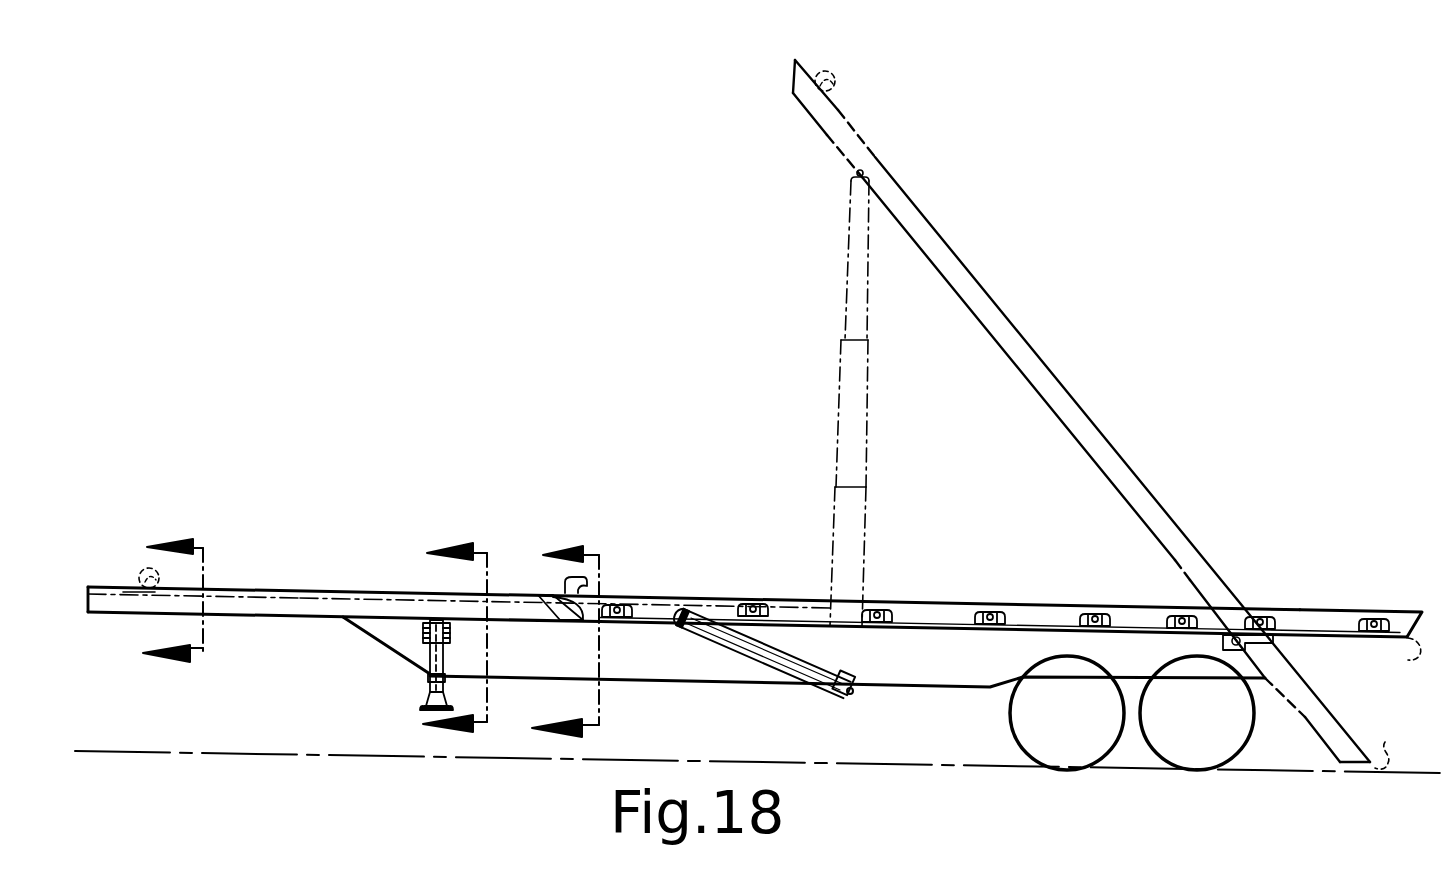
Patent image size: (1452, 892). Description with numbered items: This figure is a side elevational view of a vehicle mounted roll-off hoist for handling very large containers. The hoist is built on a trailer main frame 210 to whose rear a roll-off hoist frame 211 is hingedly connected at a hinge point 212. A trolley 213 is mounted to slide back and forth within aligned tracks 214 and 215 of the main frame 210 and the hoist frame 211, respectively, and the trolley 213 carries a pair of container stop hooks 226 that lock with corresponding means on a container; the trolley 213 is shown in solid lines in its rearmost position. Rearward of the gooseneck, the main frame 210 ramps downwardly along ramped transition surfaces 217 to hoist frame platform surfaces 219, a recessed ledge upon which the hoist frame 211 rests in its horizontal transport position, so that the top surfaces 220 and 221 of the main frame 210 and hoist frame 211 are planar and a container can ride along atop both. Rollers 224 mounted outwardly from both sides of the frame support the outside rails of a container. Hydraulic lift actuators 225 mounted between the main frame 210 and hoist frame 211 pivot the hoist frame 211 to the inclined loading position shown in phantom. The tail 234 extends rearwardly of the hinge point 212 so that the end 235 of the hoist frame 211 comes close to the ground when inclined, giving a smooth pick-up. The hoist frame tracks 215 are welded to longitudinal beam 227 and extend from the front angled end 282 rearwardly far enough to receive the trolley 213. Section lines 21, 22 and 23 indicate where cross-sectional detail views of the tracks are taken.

The section line 21- 21 is at (182, 600).
The section line 22- 22 is at (464, 643).
The section line 23- 23 is at (577, 643).
The trailer main frame 210 is at (646, 672).
The roll-off hoist frame 211 is at (1050, 365).
The hinge point 212 is at (1278, 643).
The trolley 213 is at (248, 588).
The main frame tracks 214 is at (423, 593).
The hoist frame tracks 215 is at (798, 596).
The ramped transition surfaces 217 is at (585, 624).
The hoist frame platform surfaces 219 is at (1048, 630).
The top surface of main frame 220 is at (312, 592).
The top surface of hoist frame 221 is at (905, 576).
The rollers 224 is at (617, 618).
The hydraulic lift actuators 225 is at (806, 684).
The container stop hooks 226 is at (563, 580).
The longitudinal beam 227 is at (88, 598).
The tail 234 is at (1343, 617).
The end of hoist frame 235 is at (1412, 645).
The front angled end 282 is at (545, 610).